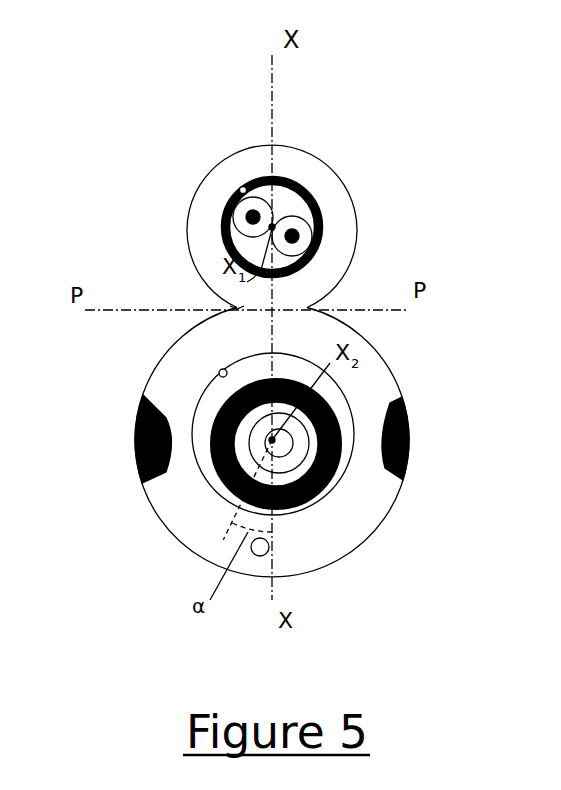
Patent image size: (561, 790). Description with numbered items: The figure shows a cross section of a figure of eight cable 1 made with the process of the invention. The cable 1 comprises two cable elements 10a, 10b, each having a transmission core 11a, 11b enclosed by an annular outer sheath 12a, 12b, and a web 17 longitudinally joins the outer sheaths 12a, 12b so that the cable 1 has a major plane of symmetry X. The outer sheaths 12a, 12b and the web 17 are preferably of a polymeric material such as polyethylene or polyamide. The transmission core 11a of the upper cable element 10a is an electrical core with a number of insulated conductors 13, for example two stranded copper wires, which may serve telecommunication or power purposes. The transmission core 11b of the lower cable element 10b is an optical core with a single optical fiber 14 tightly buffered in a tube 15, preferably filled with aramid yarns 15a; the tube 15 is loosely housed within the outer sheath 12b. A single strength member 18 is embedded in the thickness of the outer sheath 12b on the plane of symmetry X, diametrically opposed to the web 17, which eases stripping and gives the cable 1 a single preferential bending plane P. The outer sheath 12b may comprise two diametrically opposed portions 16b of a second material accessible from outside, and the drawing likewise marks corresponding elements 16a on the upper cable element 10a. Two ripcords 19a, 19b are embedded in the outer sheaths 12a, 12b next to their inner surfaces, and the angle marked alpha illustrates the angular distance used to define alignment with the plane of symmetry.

The figure of eight cable 1 is at (335, 62).
The cable element 10a is at (182, 137).
The cable element 10b is at (412, 360).
The transmission core 11a is at (210, 235).
The transmission core 11b is at (312, 525).
The outer sheath 12a is at (195, 188).
The outer sheath 12b is at (372, 533).
The insulated conductors 13 is at (262, 195).
The optical fiber 14 is at (247, 428).
The tube 15 is at (215, 470).
The aramid yarns 15a is at (250, 467).
The upper fixing elements 16a is at (325, 222).
The portions 16b is at (136, 438).
The web 17 is at (232, 305).
The strength member 18 is at (252, 553).
The ripcord 19a is at (242, 187).
The ripcord 19b is at (220, 370).